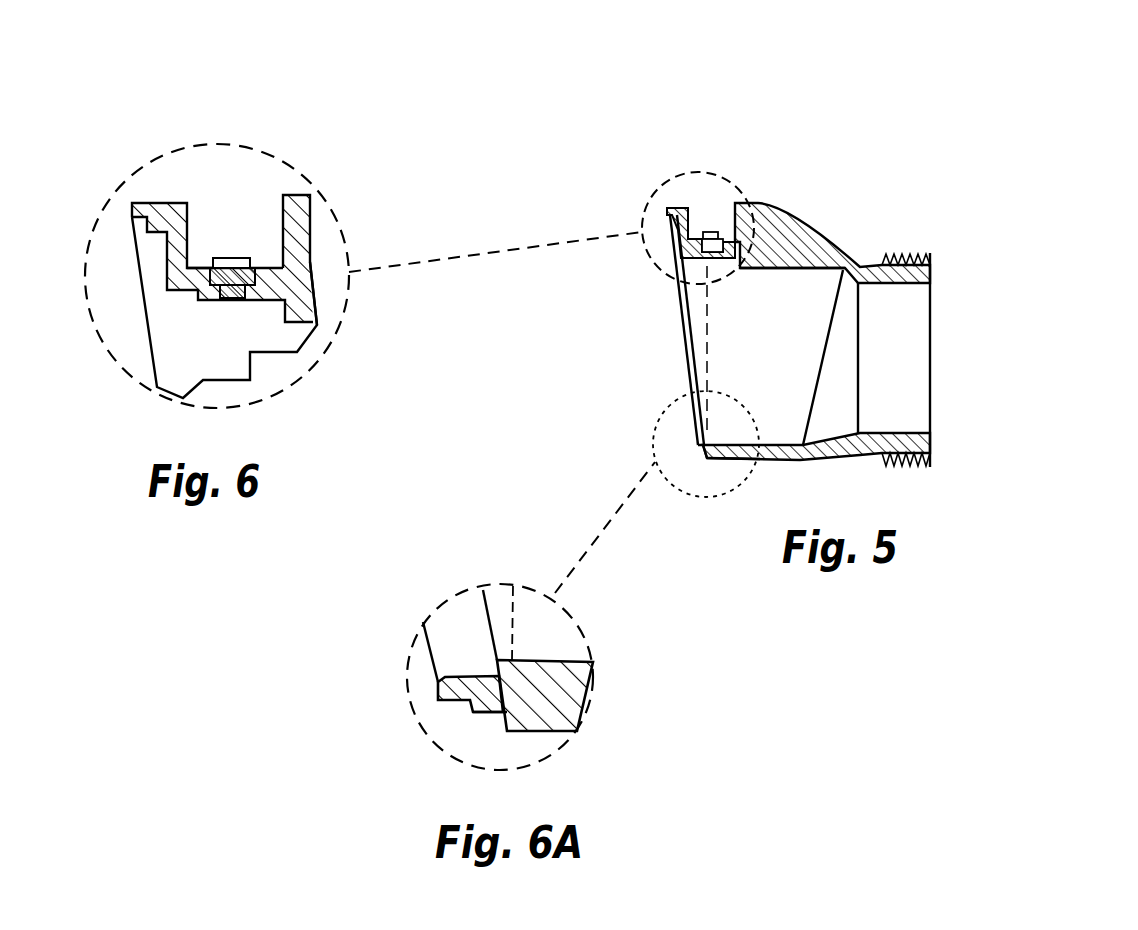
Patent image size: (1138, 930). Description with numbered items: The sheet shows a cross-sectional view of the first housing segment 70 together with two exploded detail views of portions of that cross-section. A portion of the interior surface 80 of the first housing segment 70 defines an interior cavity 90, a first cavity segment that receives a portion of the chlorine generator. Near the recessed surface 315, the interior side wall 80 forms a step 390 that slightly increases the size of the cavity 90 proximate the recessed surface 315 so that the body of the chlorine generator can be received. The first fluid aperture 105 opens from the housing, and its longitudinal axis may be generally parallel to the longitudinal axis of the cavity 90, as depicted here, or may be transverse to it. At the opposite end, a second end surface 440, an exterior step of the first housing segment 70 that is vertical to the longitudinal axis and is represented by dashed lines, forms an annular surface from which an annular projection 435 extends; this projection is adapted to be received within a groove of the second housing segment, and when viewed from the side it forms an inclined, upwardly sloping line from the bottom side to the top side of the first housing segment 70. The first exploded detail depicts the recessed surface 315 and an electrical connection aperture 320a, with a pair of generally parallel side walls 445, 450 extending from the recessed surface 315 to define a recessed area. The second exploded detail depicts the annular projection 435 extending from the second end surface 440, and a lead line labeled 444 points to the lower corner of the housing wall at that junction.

In FIG. 5, the first housing segment 70 is at (797, 218).
In FIG. 6A, the first housing segment 70 is at (538, 732).
In FIG. 5, the interior surface 80 is at (763, 272).
In FIG. 5, the cavity 90 is at (720, 343).
In FIG. 5, the first fluid aperture 105 is at (910, 370).
In FIG. 6, the recessed surface 315 is at (197, 268).
In FIG. 5, the recessed surface 315 is at (697, 235).
In FIG. 6, the electrical connection aperture 320a is at (232, 258).
In FIG. 5, the step 390 is at (735, 266).
In FIG. 5, the annular projection 435 is at (702, 448).
In FIG. 6A, the annular projection 435 is at (440, 690).
In FIG. 6A, the second end surface 440 is at (503, 727).
In FIG. 5, the bottom wall corner 444 is at (702, 455).
In FIG. 6, the side wall 445 is at (283, 210).
In FIG. 6, the side wall 450 is at (189, 209).